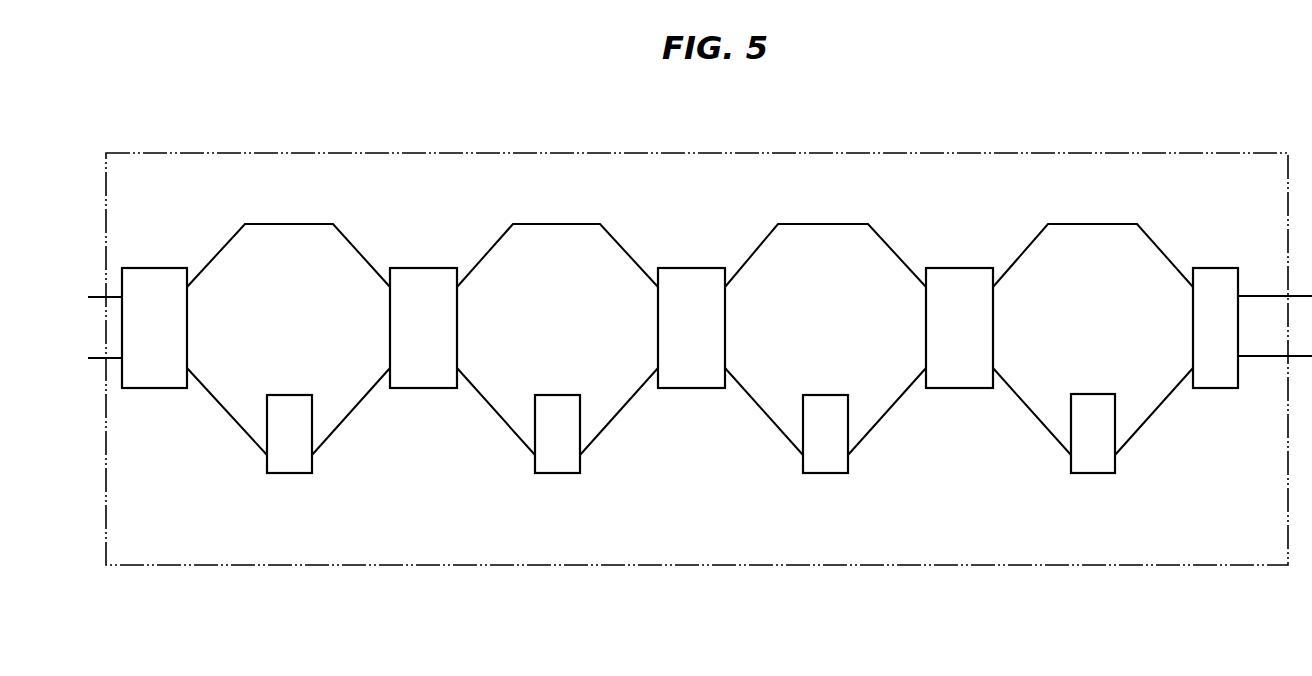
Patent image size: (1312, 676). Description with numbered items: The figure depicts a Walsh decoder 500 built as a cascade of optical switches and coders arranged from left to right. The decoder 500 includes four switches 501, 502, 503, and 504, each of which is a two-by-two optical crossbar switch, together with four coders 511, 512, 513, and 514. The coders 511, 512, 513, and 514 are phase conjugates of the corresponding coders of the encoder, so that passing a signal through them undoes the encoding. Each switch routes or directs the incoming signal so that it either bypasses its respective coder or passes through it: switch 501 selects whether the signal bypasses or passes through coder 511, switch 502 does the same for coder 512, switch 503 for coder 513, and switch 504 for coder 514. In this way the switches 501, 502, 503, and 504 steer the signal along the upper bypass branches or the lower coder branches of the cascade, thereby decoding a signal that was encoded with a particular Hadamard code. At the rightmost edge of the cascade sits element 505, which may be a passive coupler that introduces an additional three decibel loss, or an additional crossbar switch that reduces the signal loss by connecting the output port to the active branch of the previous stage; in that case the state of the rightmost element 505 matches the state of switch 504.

The decoder 500 is at (407, 153).
The switch 501 is at (160, 268).
The switch 502 is at (440, 268).
The switch 503 is at (714, 268).
The switch 504 is at (978, 268).
The rightmost element 505 is at (1227, 268).
The coder 511 is at (295, 395).
The coder 512 is at (571, 395).
The coder 513 is at (836, 395).
The coder 514 is at (1104, 394).